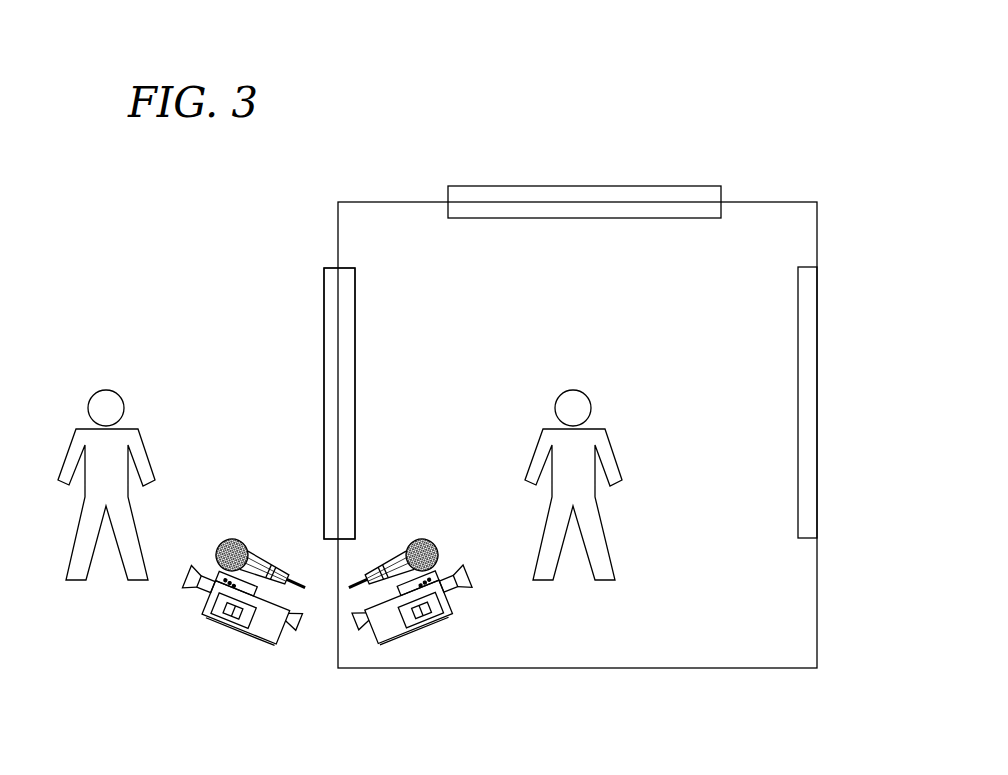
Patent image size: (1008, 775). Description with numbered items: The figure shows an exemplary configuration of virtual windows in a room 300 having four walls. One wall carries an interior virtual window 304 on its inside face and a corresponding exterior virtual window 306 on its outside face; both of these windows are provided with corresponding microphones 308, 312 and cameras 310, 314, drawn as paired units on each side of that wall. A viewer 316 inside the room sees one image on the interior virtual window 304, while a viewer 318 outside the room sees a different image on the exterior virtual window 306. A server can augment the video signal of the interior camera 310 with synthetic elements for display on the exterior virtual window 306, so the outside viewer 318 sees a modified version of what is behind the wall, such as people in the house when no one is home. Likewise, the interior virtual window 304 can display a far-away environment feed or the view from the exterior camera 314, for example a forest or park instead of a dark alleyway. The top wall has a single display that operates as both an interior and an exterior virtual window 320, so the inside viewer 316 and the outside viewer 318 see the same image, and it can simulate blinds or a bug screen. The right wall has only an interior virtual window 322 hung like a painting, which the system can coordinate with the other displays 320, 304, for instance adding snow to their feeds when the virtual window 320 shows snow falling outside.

The room 300 is at (642, 145).
The interior virtual window 304 is at (357, 292).
The exterior virtual window 306 is at (322, 292).
The interior microphone 308 is at (407, 552).
The interior camera 310 is at (415, 635).
The exterior microphone 312 is at (238, 538).
The exterior camera 314 is at (233, 632).
The inside viewer 316 is at (612, 440).
The outside viewer 318 is at (75, 440).
The single-display virtual window 320 is at (702, 186).
The wall-hung interior virtual window 322 is at (810, 397).